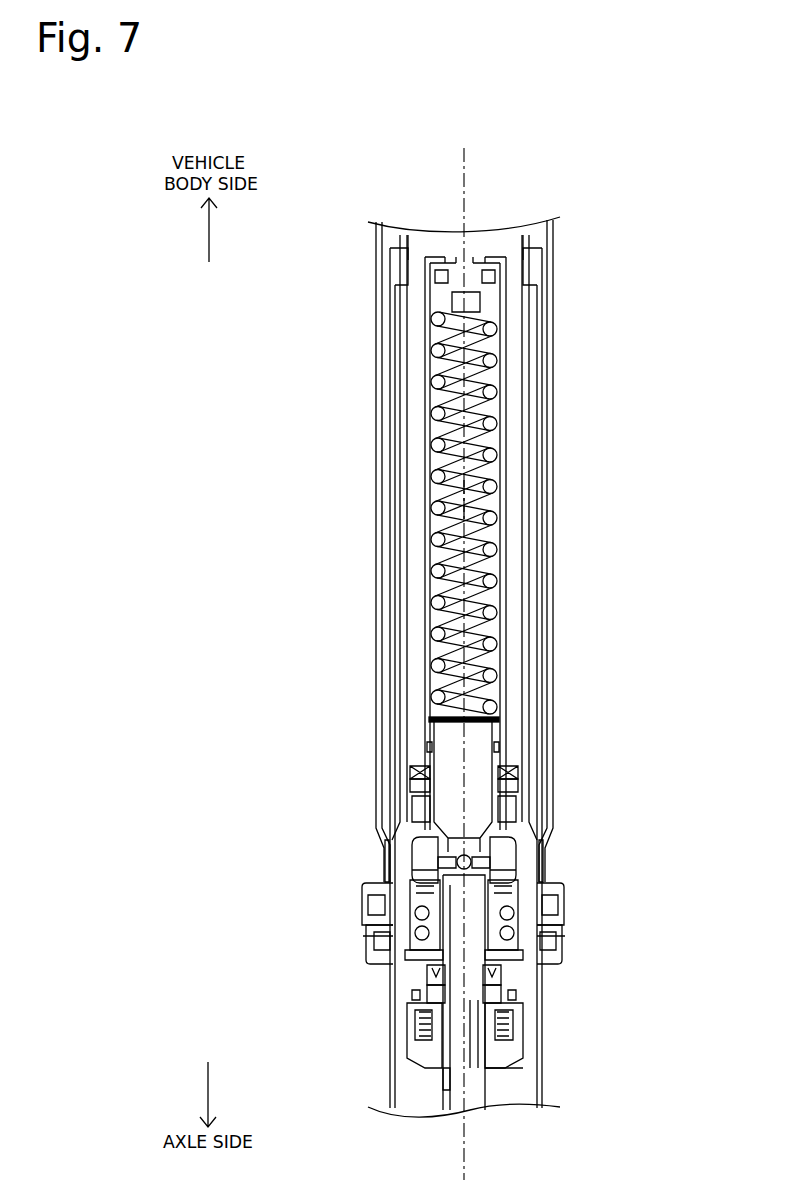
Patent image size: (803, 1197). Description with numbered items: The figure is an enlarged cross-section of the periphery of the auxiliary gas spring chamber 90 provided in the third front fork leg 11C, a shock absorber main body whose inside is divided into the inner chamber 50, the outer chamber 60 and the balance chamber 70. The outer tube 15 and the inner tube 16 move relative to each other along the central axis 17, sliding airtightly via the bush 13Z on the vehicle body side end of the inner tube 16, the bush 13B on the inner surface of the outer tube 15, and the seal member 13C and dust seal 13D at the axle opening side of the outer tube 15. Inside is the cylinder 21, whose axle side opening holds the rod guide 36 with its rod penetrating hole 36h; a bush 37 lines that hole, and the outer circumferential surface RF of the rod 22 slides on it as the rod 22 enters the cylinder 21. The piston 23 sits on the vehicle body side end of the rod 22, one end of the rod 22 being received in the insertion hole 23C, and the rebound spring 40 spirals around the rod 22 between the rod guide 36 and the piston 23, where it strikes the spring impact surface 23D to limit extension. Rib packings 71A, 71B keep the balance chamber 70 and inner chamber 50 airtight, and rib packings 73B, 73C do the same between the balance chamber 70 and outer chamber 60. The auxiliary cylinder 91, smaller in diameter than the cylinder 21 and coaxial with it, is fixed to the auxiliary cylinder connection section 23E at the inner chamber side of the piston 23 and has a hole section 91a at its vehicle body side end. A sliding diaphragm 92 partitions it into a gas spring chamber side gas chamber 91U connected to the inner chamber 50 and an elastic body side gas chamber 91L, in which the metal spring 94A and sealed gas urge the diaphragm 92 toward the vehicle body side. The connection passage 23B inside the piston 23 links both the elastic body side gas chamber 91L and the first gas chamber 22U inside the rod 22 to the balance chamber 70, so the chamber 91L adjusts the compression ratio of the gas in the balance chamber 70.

The third front fork leg 11C is at (652, 206).
The outer tube 15 is at (378, 528).
The inner tube 16 is at (392, 1048).
The central axis 17 is at (507, 498).
The cylinder 21 is at (399, 410).
The rod 22 is at (487, 1078).
The first gas chamber 22U is at (455, 1090).
The piston 23 is at (516, 752).
The connection passage 23B is at (520, 862).
The insertion hole 23C is at (430, 942).
The spring impact surface 23D is at (420, 905).
The auxiliary cylinder connection section 23E is at (432, 735).
The rod guide 36 is at (520, 1068).
The rod penetrating hole 36h is at (484, 1050).
The bush 37 is at (506, 1030).
The rebound spring 40 is at (420, 918).
The inner chamber 50 is at (507, 238).
The outer chamber 60 is at (513, 1090).
The balance chamber 70 is at (420, 853).
The rib packing 71A is at (410, 772).
The rib packing 71B is at (410, 782).
The rib packing 73B is at (428, 988).
The rib packing 73C is at (430, 975).
The auxiliary gas spring chamber 90 is at (488, 233).
The auxiliary cylinder 91 is at (506, 437).
The elastic body side gas chamber 91L is at (492, 343).
The gas spring chamber side gas chamber 91U is at (447, 265).
The hole section 91a is at (460, 268).
The diaphragm 92 is at (490, 250).
The metal spring 94A is at (494, 390).
The bush 13B is at (543, 850).
The seal member 13C is at (548, 915).
The dust seal 13D is at (560, 938).
The bush 13Z is at (540, 308).
The outer circumferential surface RF is at (490, 1075).